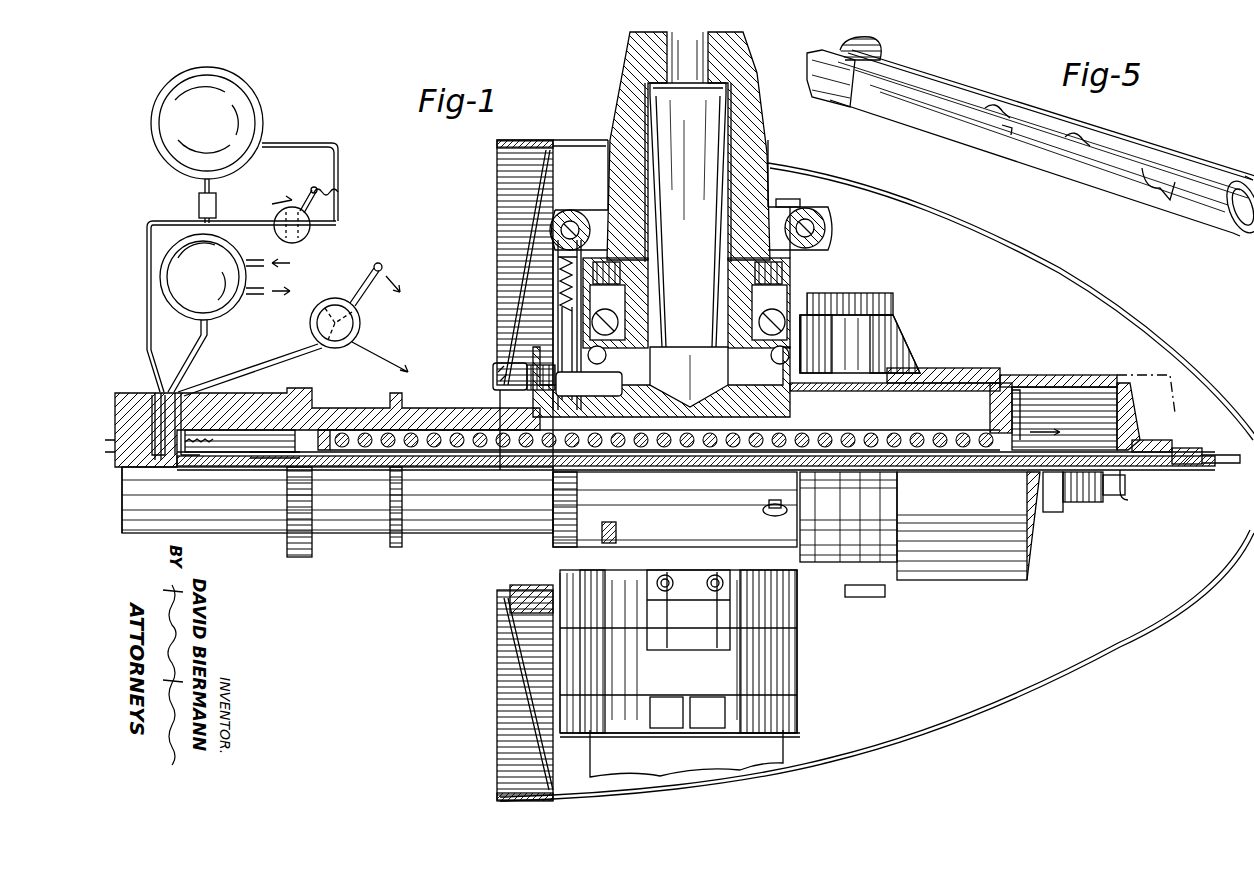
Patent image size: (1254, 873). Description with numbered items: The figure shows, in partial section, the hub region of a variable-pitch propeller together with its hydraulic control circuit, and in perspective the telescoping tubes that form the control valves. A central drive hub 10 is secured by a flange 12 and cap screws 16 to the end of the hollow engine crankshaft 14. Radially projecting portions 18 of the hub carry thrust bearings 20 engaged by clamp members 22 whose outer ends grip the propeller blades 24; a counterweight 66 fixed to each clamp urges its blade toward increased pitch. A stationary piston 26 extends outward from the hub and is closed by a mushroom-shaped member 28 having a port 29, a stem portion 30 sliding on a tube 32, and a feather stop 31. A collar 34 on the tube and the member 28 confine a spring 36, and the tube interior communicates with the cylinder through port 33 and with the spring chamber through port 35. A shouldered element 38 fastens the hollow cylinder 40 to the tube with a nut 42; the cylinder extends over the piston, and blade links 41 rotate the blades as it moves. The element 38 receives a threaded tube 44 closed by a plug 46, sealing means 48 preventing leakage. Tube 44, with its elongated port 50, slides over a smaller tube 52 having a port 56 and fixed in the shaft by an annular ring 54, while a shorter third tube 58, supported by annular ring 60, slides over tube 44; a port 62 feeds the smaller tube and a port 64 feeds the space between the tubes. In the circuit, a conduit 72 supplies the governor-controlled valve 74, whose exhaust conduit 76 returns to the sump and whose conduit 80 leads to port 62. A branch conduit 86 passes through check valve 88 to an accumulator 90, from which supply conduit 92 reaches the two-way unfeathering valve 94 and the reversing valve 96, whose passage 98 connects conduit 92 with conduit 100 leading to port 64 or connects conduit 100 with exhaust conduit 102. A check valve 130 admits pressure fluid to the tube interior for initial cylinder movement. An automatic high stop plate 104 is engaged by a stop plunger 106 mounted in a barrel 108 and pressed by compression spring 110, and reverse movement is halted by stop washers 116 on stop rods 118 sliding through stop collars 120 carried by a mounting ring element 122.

In FIG. 1, the central drive hub 10 is at (778, 270).
In FIG. 1, the flange 12 is at (500, 398).
In FIG. 1, the engine crankshaft 14 is at (345, 412).
In FIG. 1, the cap screws 16 is at (493, 375).
In FIG. 1, the radially projecting portions 18 is at (785, 286).
In FIG. 1, the thrust bearings 20 is at (835, 300).
In FIG. 1, the clamp members 22 is at (795, 345).
In FIG. 1, the propeller blades 24 is at (757, 78).
In FIG. 1, the stationary piston 26 is at (885, 386).
In FIG. 1, the mushroom-shaped member 28 is at (990, 395).
In FIG. 1, the port 29 is at (1010, 440).
In FIG. 1, the stem portion 30 is at (920, 455).
In FIG. 1, the stop 31 is at (1018, 400).
In FIG. 1, the tube 32 is at (960, 460).
In FIG. 5, the tube 32 is at (1130, 147).
In FIG. 1, the port 33 is at (1110, 450).
In FIG. 1, the collar 34 is at (327, 420).
In FIG. 5, the collar 34 is at (880, 52).
In FIG. 1, the port 35 is at (582, 460).
In FIG. 1, the spring 36 is at (440, 420).
In FIG. 1, the shouldered element 38 is at (1188, 448).
In FIG. 1, the hollow cylinder 40 is at (1085, 378).
In FIG. 1, the blade links 41 is at (865, 582).
In FIG. 1, the nut 42 is at (1140, 440).
In FIG. 1, the tube 44 is at (1140, 485).
In FIG. 5, the tube 44 is at (1170, 200).
In FIG. 1, the plug 46 is at (1218, 470).
In FIG. 1, the sealing means 48 is at (1160, 450).
In FIG. 1, the elongated port 50 is at (490, 462).
In FIG. 5, the elongated port 50 is at (1000, 118).
In FIG. 1, the smaller tube 52 is at (430, 475).
In FIG. 5, the smaller tube 52 is at (1020, 148).
In FIG. 1, the annular ring 54 is at (165, 462).
In FIG. 1, the port 56 is at (462, 466).
In FIG. 5, the port 56 is at (990, 142).
In FIG. 1, the tube 58 is at (250, 456).
In FIG. 5, the tube 58 is at (822, 95).
In FIG. 1, the annular ring 60 is at (183, 458).
In FIG. 1, the port 62 is at (148, 395).
In FIG. 1, the port 64 is at (180, 396).
In FIG. 1, the counterweight 66 is at (900, 335).
In FIG. 1, the conduit 72 is at (256, 260).
In FIG. 1, the governor-controlled valve 74 is at (203, 277).
In FIG. 1, the conduit 76 is at (252, 300).
In FIG. 1, the conduit 80 is at (214, 348).
In FIG. 1, the branch conduit 86 is at (147, 312).
In FIG. 1, the check valve 88 is at (199, 205).
In FIG. 1, the accumulator 90 is at (262, 100).
In FIG. 1, the supply conduit 92 is at (328, 140).
In FIG. 1, the two-way unfeathering valve 94 is at (280, 218).
In FIG. 1, the reversing valve 96 is at (361, 325).
In FIG. 1, the passage 98 is at (320, 302).
In FIG. 1, the conduit 100 is at (287, 346).
In FIG. 1, the exhaust conduit 102 is at (395, 352).
In FIG. 1, the automatic high stop plate 104 is at (608, 600).
In FIG. 1, the stop plunger 106 is at (553, 325).
In FIG. 1, the barrel 108 is at (553, 300).
In FIG. 1, the compression spring 110 is at (572, 245).
In FIG. 1, the stop washers 116 is at (612, 520).
In FIG. 1, the stop rods 118 is at (684, 529).
In FIG. 1, the stop ears or collars 120 is at (768, 486).
In FIG. 1, the mounting ring element 122 is at (793, 380).
In FIG. 1, the check valve 130 is at (225, 428).